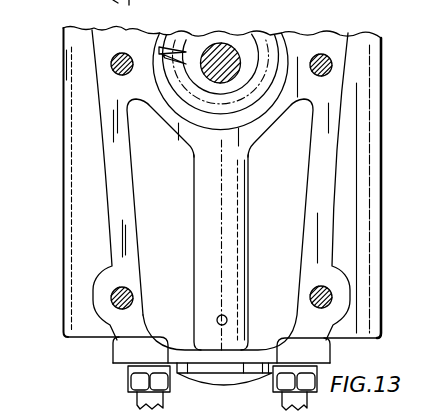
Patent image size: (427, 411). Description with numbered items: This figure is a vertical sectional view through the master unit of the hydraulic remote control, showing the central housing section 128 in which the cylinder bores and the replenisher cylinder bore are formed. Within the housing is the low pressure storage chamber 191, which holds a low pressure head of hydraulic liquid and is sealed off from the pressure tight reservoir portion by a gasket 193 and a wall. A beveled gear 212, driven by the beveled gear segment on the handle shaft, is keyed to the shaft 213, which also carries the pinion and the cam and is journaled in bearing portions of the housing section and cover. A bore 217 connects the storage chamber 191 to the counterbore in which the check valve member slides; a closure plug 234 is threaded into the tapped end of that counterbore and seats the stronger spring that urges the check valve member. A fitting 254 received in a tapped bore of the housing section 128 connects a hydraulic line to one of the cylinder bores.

The central housing section 128 is at (63, 267).
The low pressure storage chamber 191 is at (178, 234).
The gasket 193 is at (118, 181).
The beveled gear 212 is at (163, 47).
The shaft 213 is at (230, 46).
The bore 217 is at (217, 317).
The closure plug 234 is at (227, 381).
The fitting 254 is at (128, 378).